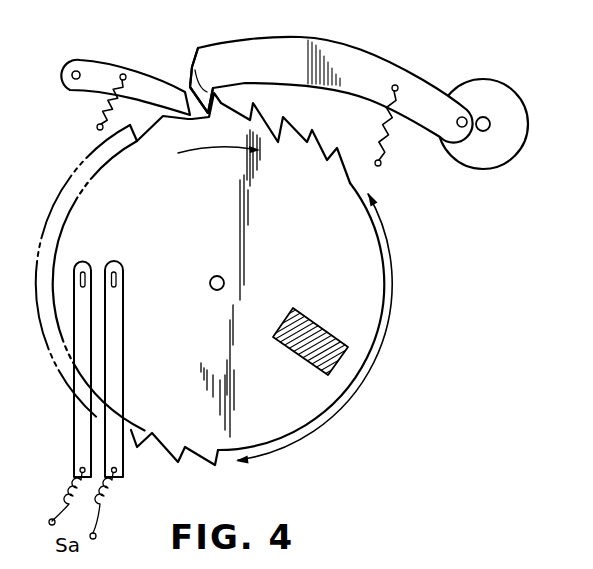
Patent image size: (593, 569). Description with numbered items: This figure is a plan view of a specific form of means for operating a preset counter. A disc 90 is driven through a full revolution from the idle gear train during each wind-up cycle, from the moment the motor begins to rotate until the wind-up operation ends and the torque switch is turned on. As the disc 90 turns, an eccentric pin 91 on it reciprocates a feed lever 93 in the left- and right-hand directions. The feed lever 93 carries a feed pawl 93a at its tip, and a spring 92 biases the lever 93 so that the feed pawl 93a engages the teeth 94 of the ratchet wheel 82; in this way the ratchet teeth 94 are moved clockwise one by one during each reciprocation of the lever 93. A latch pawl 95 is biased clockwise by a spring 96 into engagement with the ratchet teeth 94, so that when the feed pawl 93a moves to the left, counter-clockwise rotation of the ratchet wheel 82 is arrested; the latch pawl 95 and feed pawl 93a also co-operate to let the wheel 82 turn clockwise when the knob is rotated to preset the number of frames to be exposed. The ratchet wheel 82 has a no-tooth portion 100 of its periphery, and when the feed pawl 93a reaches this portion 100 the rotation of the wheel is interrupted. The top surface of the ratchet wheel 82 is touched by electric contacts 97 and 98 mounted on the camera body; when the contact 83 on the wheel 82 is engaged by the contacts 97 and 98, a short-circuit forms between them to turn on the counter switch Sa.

The ratchet wheel 82 is at (374, 270).
The contact 83 is at (287, 340).
The disc 90 is at (512, 100).
The eccentric pin 91 is at (462, 116).
The spring 92 is at (392, 127).
The feed lever 93 is at (358, 55).
The feed pawl 93a is at (192, 67).
The teeth 94 is at (266, 113).
The latch pawl 95 is at (147, 77).
The spring 96 is at (107, 103).
The electric contact 97 is at (80, 261).
The electric contact 98 is at (115, 265).
The no-tooth portion 100 is at (230, 294).